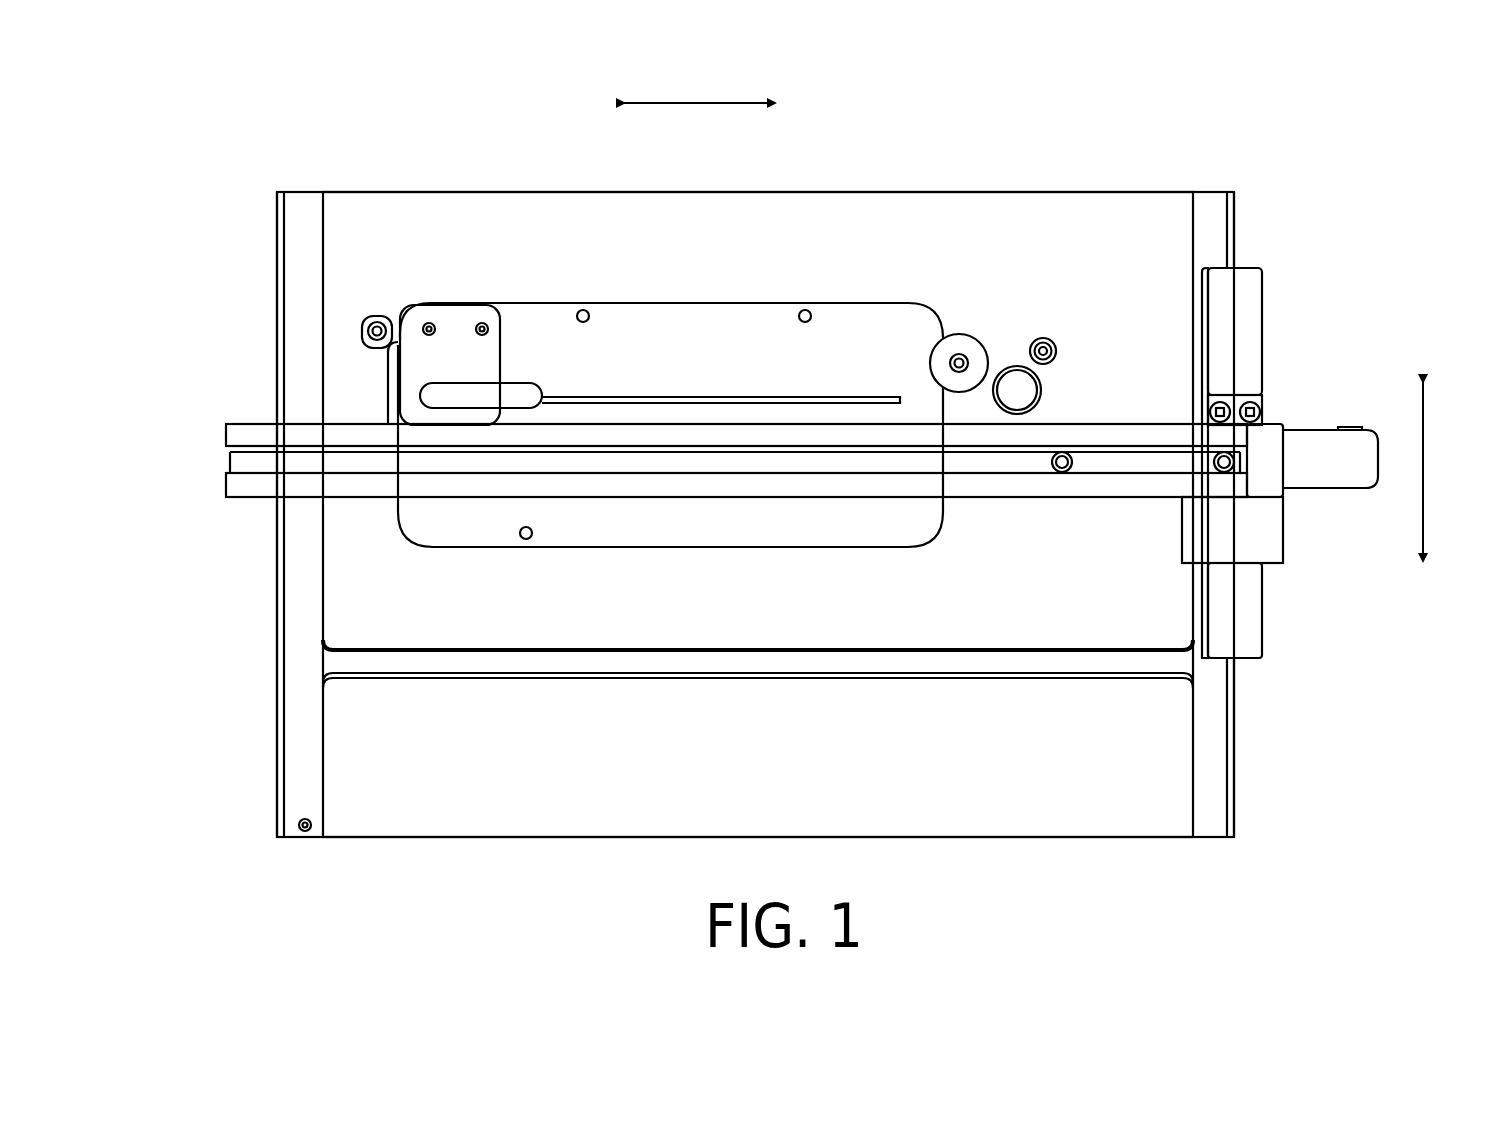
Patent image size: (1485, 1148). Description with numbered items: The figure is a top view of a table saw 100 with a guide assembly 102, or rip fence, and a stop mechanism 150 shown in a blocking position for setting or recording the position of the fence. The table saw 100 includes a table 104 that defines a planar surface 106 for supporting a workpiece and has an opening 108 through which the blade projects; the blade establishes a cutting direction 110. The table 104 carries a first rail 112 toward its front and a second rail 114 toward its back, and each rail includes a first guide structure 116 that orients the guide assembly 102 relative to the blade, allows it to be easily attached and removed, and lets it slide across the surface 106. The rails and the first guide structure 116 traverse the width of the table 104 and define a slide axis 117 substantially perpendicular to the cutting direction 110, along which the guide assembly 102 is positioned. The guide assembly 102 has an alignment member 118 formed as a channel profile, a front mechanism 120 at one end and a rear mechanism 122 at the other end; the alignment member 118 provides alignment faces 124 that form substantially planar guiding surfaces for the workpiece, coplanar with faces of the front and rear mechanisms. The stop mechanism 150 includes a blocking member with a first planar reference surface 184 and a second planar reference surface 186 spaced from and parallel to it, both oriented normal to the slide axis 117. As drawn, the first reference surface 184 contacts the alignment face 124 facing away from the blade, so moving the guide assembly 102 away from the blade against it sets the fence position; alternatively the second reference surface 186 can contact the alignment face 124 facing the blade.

The table saw 100 is at (163, 166).
The guide assembly 102 is at (697, 449).
The table 104 is at (441, 190).
The planar surface 106 is at (1018, 217).
The opening 108 is at (638, 392).
The cutting direction 110 is at (669, 103).
The first rail 112 is at (1240, 200).
The second rail 114 is at (268, 763).
The first guide structure 116 is at (1237, 233).
The slide axis 117 is at (1427, 473).
The alignment member 118 is at (264, 422).
The front mechanism 120 is at (1279, 413).
The rear mechanism 122 is at (220, 490).
The alignment faces 124 is at (352, 423).
The stop mechanism 150 is at (1302, 541).
The first planar reference surface 184 is at (1283, 487).
The second planar reference surface 186 is at (1233, 565).